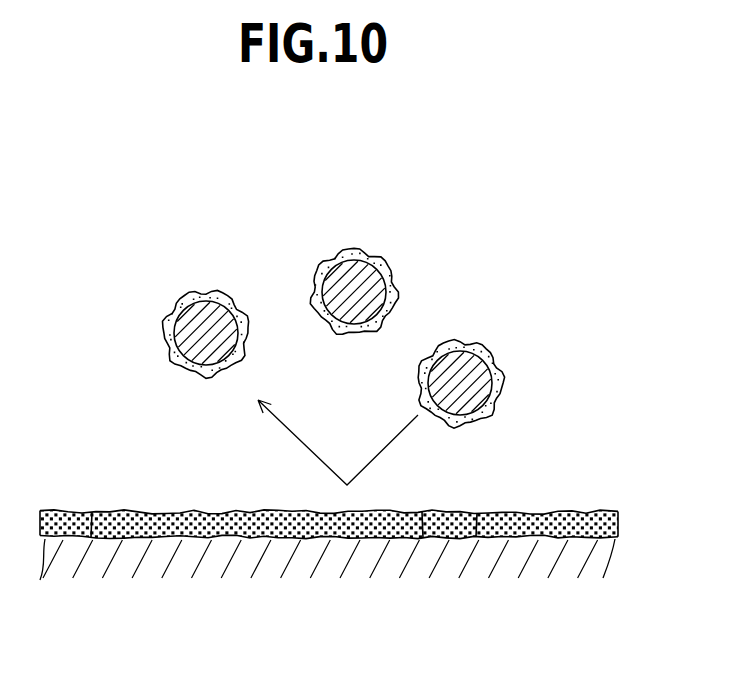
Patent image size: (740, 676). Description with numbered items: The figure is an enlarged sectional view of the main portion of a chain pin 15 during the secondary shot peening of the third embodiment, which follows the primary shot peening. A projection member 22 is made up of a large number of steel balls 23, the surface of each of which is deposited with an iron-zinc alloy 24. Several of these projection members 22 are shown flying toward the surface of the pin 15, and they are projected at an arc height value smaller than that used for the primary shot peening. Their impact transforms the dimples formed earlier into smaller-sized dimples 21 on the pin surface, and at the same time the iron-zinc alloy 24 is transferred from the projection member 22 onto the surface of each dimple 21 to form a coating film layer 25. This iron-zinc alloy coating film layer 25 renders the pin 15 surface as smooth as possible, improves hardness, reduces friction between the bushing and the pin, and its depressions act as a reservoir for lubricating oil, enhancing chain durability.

The chain pin 15 is at (242, 553).
The dimple 21 is at (91, 512).
The projection member 22 is at (178, 275).
The steel ball 23 is at (192, 334).
The iron-zinc alloy 24 is at (178, 302).
The coating film layer 25 is at (145, 513).